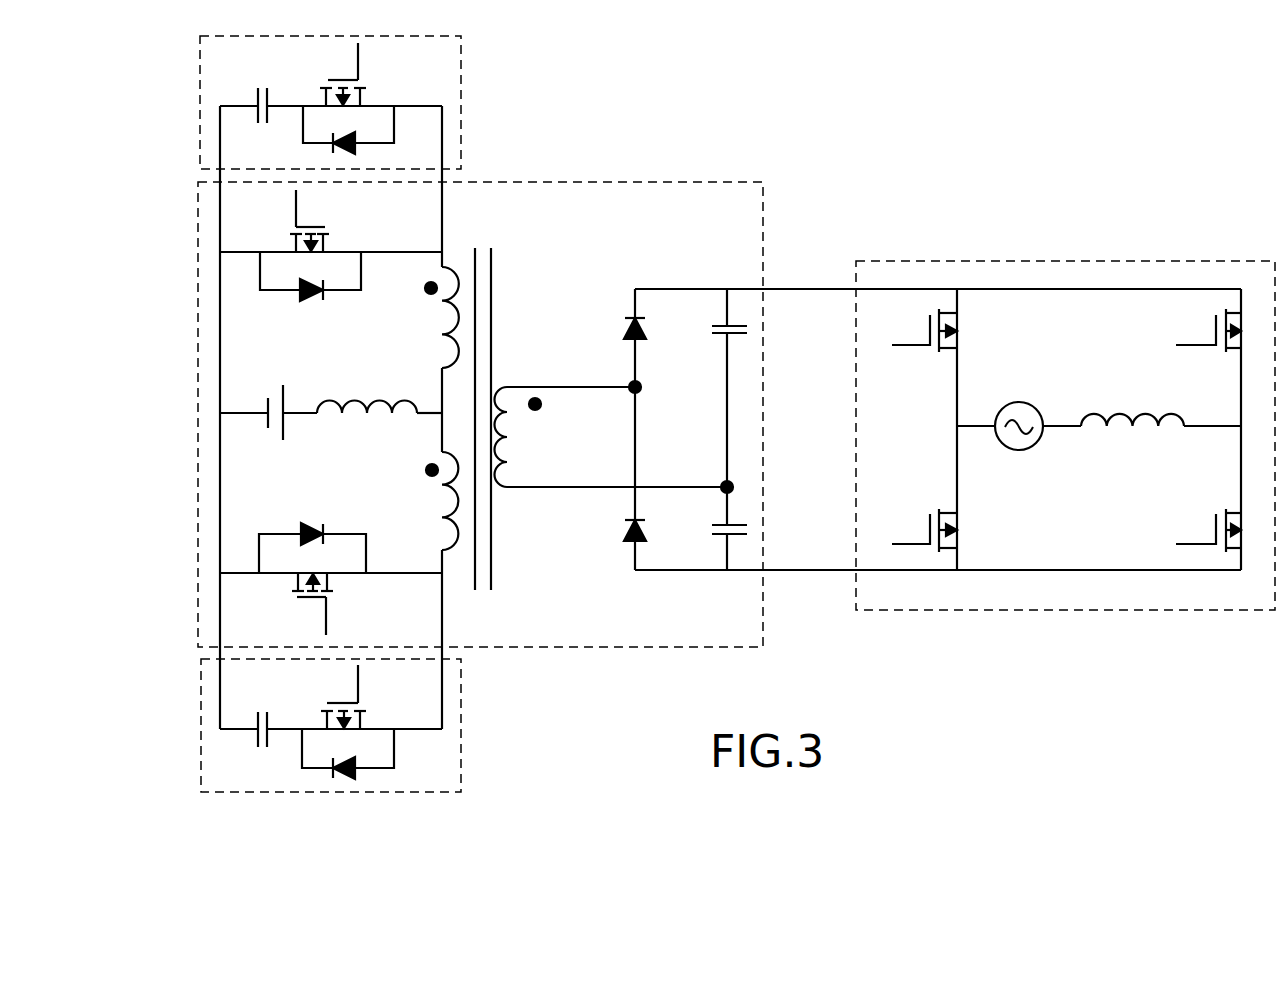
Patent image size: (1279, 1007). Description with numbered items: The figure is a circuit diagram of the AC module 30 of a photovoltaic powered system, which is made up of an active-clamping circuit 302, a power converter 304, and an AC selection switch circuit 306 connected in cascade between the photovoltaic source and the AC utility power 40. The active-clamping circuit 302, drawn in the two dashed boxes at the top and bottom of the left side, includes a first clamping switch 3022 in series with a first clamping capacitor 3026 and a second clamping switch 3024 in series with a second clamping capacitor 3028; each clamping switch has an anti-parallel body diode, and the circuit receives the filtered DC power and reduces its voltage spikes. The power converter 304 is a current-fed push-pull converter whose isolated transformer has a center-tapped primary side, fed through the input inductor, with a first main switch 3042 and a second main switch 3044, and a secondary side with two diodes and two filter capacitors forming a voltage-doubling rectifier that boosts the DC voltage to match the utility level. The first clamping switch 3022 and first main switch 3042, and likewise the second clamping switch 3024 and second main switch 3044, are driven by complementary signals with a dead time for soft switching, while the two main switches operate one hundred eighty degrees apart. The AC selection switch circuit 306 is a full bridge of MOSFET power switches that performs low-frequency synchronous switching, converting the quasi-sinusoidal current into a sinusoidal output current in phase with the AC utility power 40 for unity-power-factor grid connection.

The AC module 30 is at (982, 114).
The active-clamping circuit 302 is at (461, 70).
The first clamping switch 3022 is at (365, 82).
The second clamping switch 3024 is at (363, 705).
The first clamping capacitor 3026 is at (260, 83).
The second clamping capacitor 3028 is at (250, 737).
The power converter 304 is at (643, 180).
The first main switch 3042 is at (330, 229).
The second main switch 3044 is at (333, 597).
The AC selection switch circuit 306 is at (1023, 261).
The AC utility power 40 is at (1021, 444).